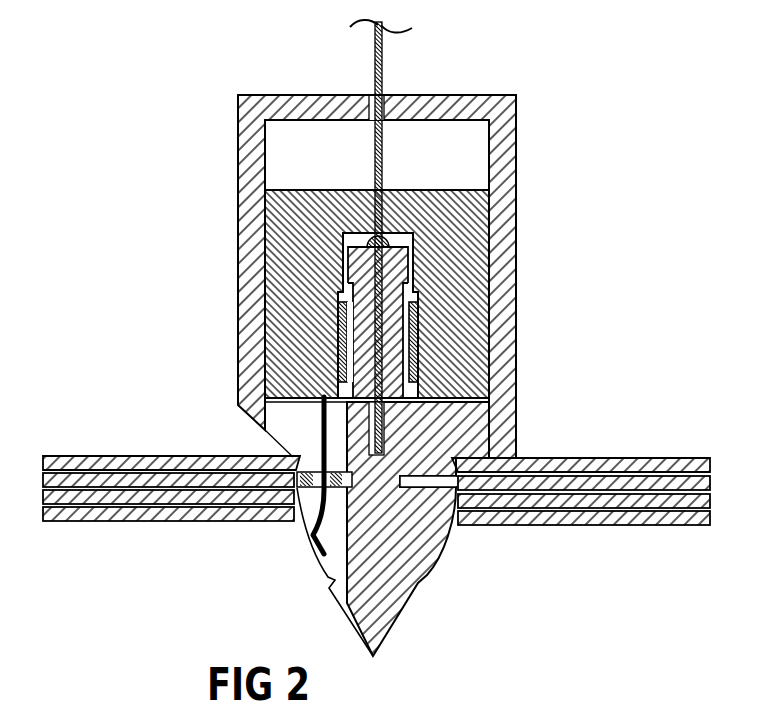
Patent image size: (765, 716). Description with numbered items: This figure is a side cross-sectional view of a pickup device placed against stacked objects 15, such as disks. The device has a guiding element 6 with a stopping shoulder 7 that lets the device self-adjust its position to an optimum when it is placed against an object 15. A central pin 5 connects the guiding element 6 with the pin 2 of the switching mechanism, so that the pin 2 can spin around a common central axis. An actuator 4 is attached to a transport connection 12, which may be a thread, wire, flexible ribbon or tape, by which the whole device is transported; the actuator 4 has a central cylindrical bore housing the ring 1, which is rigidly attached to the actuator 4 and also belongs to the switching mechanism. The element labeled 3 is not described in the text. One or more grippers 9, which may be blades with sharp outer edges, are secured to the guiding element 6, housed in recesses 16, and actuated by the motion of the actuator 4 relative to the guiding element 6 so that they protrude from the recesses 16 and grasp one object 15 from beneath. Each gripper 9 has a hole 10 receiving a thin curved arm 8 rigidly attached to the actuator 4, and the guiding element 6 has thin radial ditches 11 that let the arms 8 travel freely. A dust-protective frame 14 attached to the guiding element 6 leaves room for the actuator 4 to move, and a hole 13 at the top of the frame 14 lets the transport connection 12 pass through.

The ring 1 is at (338, 335).
The pin 2 is at (353, 293).
The cap 3 is at (348, 256).
The actuator 4 is at (293, 200).
The central pin 5 is at (352, 359).
The guiding element 6 is at (403, 535).
The stopping shoulder 7 is at (484, 463).
The curved arm 8 is at (316, 447).
The gripper 9 is at (352, 510).
The hole 10 is at (318, 490).
The radial ditch 11 is at (293, 418).
The transport connection 12 is at (375, 63).
The hole 13 is at (388, 97).
The dust-protective frame 14 is at (253, 143).
The object 15 is at (550, 503).
The recess 16 is at (415, 482).